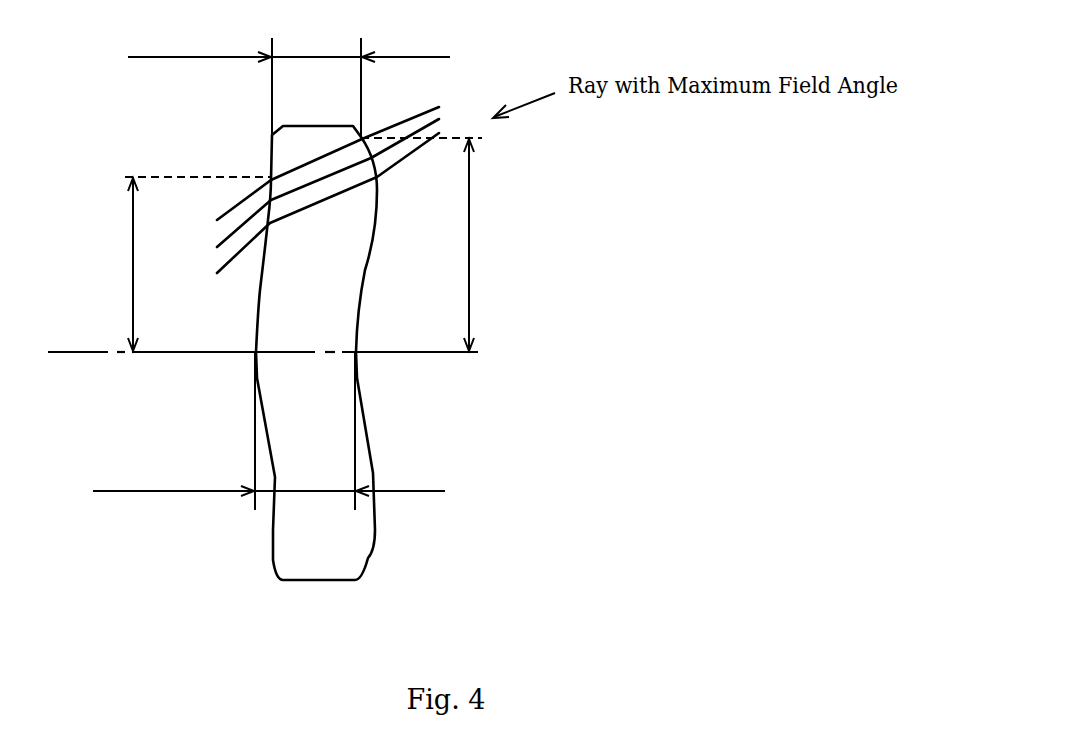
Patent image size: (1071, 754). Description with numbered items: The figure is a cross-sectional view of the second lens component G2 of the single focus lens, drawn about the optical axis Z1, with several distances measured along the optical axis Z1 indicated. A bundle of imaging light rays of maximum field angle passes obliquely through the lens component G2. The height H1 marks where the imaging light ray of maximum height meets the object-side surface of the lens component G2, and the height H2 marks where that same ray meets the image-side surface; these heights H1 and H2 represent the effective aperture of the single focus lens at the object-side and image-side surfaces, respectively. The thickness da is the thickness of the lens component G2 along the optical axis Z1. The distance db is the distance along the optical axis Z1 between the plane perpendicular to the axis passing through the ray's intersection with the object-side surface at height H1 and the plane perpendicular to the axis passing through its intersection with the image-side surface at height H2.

The second lens group G2 is at (319, 569).
The optical axis Z1 is at (62, 352).
The height of the imaging light ray of maximum height at the object-side surface H1 is at (186, 264).
The height of the imaging light ray of maximum height at the image-side surface H2 is at (432, 245).
The thickness along the optical axis of the second lens component da is at (269, 431).
The distance along the optical axis between the intersection planes of the maximum-h db is at (289, 81).